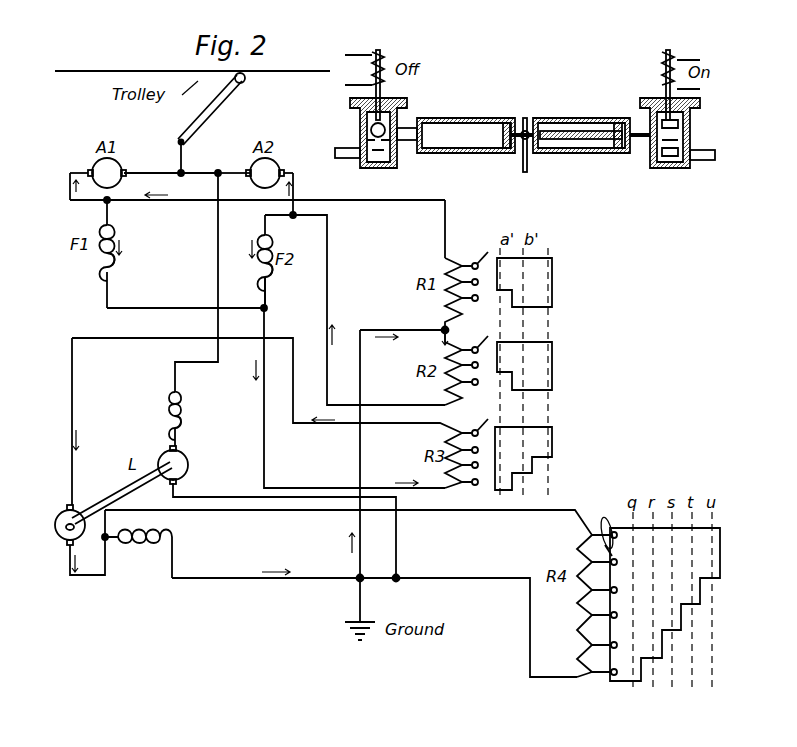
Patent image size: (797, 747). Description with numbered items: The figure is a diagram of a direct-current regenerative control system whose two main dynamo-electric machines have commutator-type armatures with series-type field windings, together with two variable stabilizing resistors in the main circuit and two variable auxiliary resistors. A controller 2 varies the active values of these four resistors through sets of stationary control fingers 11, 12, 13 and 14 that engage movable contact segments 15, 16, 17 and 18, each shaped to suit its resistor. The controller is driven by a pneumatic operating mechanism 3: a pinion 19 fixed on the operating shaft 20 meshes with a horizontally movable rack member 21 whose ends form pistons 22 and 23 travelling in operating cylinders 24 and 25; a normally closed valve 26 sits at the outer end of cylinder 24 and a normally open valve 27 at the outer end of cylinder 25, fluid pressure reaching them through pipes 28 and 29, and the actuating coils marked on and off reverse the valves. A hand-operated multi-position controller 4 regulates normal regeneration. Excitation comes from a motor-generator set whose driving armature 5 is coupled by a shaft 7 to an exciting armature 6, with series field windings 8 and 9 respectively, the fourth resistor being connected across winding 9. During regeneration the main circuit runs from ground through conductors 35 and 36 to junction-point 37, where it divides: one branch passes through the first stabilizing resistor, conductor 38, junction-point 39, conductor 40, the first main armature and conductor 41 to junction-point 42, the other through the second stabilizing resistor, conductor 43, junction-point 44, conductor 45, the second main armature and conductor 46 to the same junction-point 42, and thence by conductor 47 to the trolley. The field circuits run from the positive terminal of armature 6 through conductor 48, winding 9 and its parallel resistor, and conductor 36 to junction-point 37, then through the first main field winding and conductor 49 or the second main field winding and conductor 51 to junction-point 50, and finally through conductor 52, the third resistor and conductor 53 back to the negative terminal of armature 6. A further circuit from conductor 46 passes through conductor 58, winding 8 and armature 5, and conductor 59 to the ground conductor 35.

The controller 2 is at (533, 226).
The operating mechanism 3 is at (526, 110).
The multi-position controller 4 is at (690, 494).
The driving armature 5 is at (186, 458).
The exciting armature 6 is at (55, 522).
The shaft 7 is at (118, 490).
The series-related field winding 8 is at (180, 418).
The series-related field winding 9 is at (128, 548).
The set of stationary control fingers 11 is at (480, 268).
The set of stationary control fingers 12 is at (480, 352).
The set of stationary control fingers 13 is at (480, 445).
The set of stationary control fingers 14 is at (608, 513).
The movable contact segment 15 is at (552, 283).
The movable contact segment 16 is at (552, 366).
The movable contact segment 17 is at (552, 443).
The movable contact segment 18 is at (720, 545).
The pinion 19 is at (528, 118).
The operating shaft 20 is at (523, 170).
The rack member 21 is at (585, 150).
The piston 22 is at (616, 122).
The piston 23 is at (503, 122).
The operating cylinder 24 is at (590, 110).
The operating cylinder 25 is at (450, 118).
The normally closed valve 26 is at (690, 133).
The normally open valve 27 is at (360, 134).
The pipe 28 is at (708, 160).
The pipe 29 is at (345, 162).
The conductor 35 is at (360, 602).
The conductor 36 is at (360, 456).
The junction-point 37 is at (442, 330).
The conductor 38 is at (445, 228).
The junction-point 39 is at (110, 203).
The conductor 40 is at (70, 190).
The conductor 41 is at (152, 163).
The junction-point 42 is at (185, 171).
The conductor 43 is at (392, 400).
The junction-point 44 is at (290, 220).
The conductor 45 is at (303, 188).
The conductor 46 is at (220, 171).
The conductor 47 is at (183, 150).
The conductor 48 is at (70, 566).
The conductor 49 is at (185, 298).
The junction-point 50 is at (260, 312).
The conductor 51 is at (266, 292).
The conductor 52 is at (264, 408).
The conductor 53 is at (72, 380).
The conductor 58 is at (196, 282).
The conductor 59 is at (243, 500).